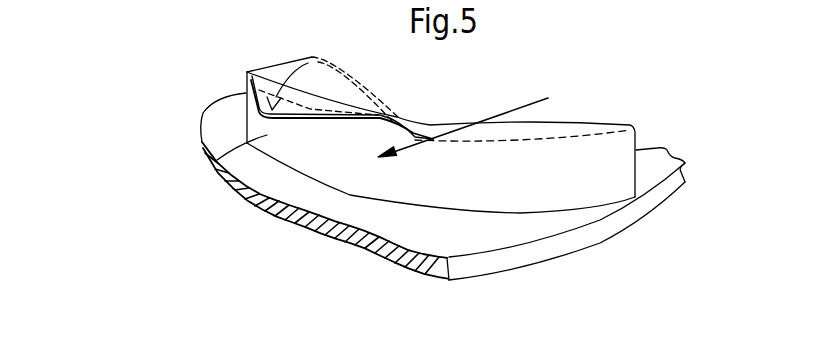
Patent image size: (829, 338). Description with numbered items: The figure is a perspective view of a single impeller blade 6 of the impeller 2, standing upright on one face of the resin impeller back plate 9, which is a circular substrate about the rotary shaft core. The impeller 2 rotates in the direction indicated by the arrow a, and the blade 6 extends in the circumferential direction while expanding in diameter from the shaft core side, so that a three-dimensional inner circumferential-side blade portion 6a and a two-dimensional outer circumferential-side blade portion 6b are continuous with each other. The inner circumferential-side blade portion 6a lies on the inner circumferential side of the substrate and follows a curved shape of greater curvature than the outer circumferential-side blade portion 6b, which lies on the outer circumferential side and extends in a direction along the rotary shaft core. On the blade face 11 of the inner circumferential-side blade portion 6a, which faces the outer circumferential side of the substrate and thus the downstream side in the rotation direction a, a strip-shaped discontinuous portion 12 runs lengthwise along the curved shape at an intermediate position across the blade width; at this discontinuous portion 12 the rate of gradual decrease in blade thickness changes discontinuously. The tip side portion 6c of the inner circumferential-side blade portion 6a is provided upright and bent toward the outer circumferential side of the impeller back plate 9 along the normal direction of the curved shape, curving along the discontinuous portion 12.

The impeller 2 is at (178, 108).
The impeller blade 6 is at (586, 120).
The inner circumferential-side blade portion 6a is at (253, 185).
The outer circumferential-side blade portion 6b is at (446, 180).
The tip side portion 6c is at (255, 103).
The impeller back plate 9 is at (613, 225).
The blade face 11 is at (207, 161).
The discontinuous portion 12 is at (308, 110).
The rotation direction arrow a is at (507, 120).